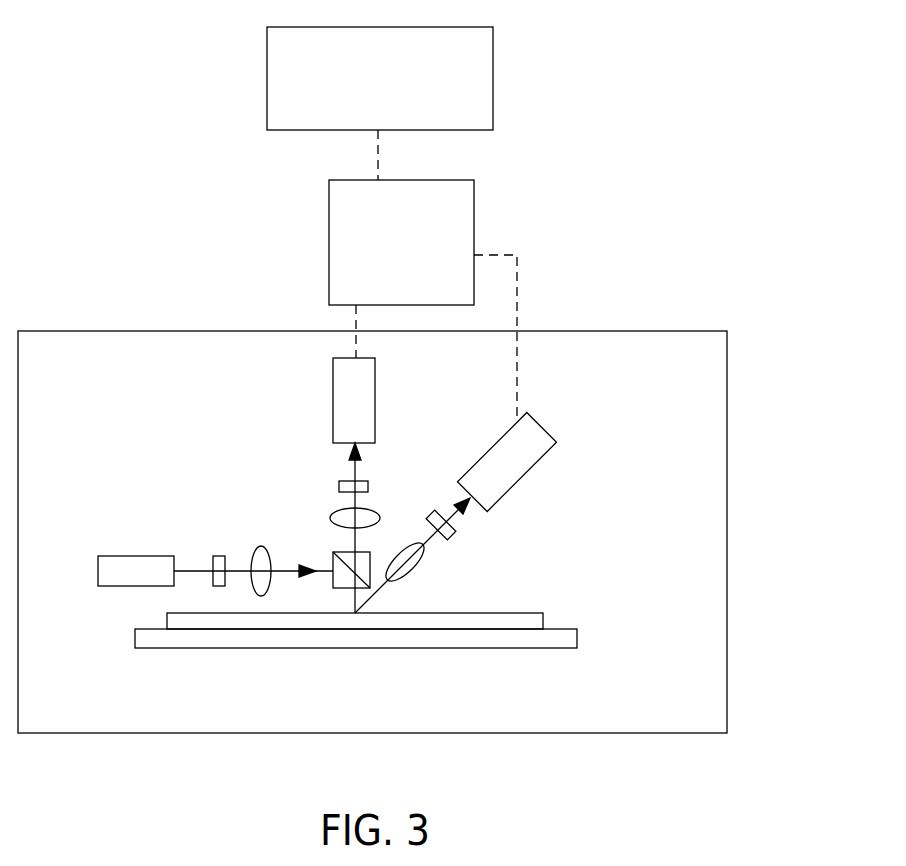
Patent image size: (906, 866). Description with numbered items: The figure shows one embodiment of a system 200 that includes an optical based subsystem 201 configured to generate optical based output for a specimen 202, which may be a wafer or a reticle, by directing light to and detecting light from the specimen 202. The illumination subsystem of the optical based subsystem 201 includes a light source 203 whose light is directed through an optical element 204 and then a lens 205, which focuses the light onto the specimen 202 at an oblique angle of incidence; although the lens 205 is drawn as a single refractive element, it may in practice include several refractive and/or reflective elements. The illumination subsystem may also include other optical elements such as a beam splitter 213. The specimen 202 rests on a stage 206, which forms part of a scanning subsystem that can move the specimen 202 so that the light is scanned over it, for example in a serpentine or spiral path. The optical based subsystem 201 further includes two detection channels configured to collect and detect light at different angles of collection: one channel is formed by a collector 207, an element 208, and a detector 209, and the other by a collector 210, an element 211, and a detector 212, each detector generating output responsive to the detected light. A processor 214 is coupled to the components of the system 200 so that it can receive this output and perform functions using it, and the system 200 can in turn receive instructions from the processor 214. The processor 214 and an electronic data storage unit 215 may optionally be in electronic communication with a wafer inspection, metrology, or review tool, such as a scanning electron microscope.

The system 200 is at (157, 99).
The optical based subsystem 201 is at (727, 352).
The specimen 202 is at (167, 614).
The light source 203 is at (108, 556).
The optical element 204 is at (222, 556).
The lens 205 is at (258, 546).
The stage 206 is at (135, 645).
The collector 207 is at (335, 512).
The element 208 is at (339, 483).
The detector 209 is at (333, 405).
The collector 210 is at (423, 578).
The element 211 is at (450, 535).
The detector 212 is at (540, 462).
The beam splitter 213 is at (340, 553).
The processor 214 is at (421, 255).
The electronic data storage unit 215 is at (380, 78).